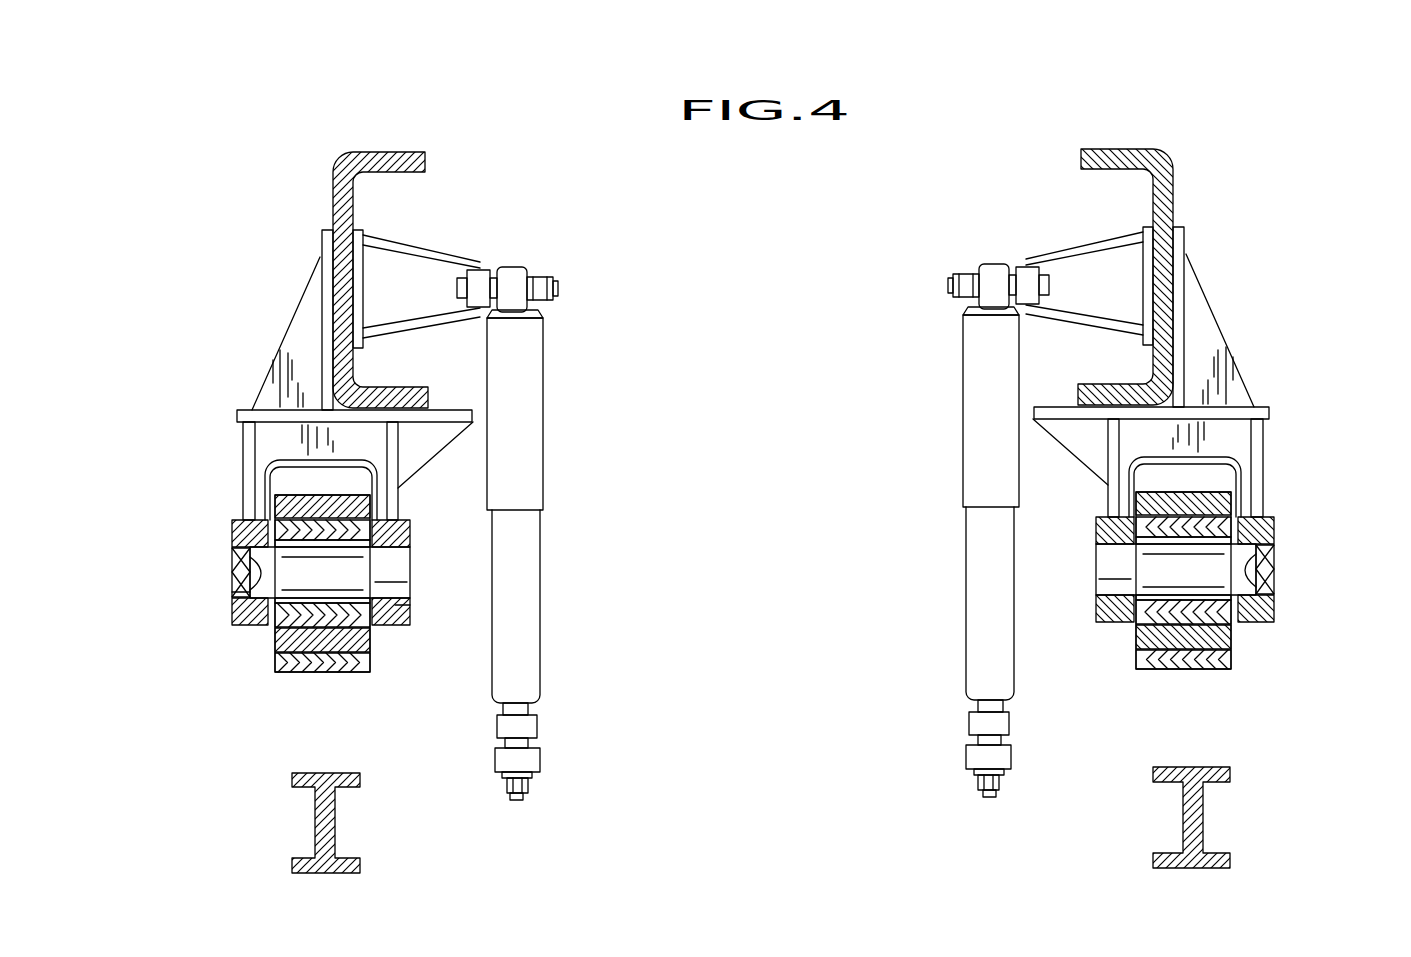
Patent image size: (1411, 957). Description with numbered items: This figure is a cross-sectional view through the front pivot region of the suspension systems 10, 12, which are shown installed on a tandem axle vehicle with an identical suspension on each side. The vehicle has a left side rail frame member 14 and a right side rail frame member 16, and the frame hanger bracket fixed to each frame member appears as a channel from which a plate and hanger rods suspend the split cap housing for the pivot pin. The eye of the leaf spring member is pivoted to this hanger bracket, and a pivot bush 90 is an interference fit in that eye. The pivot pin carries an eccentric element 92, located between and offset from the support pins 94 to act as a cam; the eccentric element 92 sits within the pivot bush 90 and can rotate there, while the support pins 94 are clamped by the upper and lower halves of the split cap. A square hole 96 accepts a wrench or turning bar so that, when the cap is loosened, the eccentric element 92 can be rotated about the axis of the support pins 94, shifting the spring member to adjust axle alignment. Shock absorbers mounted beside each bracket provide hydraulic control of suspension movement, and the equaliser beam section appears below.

The suspension system 10 is at (1300, 408).
The suspension system 12 is at (238, 372).
The left side rail frame member 14 is at (1172, 190).
The right side rail frame member 16 is at (427, 153).
The pivot bush 90 is at (363, 633).
The eccentric element 92 is at (293, 612).
The support pins 94 is at (232, 592).
The square hole 96 is at (232, 577).